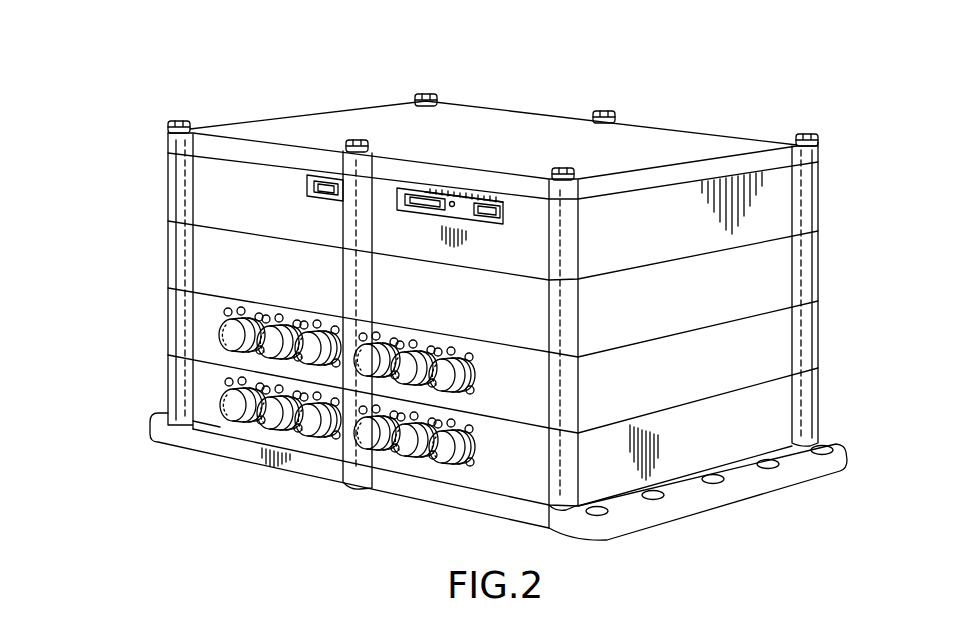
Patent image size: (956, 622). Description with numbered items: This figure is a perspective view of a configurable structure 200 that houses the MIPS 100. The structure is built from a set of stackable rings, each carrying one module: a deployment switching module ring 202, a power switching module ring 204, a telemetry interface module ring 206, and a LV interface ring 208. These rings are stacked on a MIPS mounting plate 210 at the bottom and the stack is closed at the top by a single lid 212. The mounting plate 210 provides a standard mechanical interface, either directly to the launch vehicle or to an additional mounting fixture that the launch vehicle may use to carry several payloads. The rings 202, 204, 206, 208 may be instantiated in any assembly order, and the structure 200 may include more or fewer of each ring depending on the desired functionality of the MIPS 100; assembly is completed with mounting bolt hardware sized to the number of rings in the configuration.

The MIPS 100 is at (120, 64).
The configurable structure 200 is at (288, 98).
The deployment switching module ring 202 is at (200, 392).
The power switching module ring 204 is at (200, 327).
The telemetry interface module ring 206 is at (200, 187).
The LV interface ring 208 is at (200, 258).
The MIPS mounting plate 210 is at (188, 433).
The lid 212 is at (700, 142).